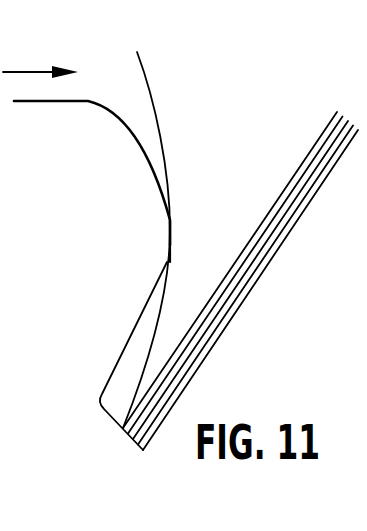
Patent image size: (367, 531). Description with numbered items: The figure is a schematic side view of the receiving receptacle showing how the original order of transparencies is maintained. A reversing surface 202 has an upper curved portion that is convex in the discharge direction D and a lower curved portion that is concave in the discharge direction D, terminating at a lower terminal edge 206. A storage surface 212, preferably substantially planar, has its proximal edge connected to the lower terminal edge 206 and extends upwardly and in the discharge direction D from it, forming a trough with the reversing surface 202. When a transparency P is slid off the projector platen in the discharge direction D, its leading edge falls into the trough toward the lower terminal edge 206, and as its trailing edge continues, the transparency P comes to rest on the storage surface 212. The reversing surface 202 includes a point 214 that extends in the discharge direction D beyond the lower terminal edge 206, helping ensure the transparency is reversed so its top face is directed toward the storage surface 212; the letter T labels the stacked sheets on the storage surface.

The reversing surface 202 is at (154, 170).
The lower terminal edge 206 is at (140, 452).
The storage surface 212 is at (228, 327).
The point 214 is at (170, 232).
The transparency P is at (143, 67).
The discharge direction D is at (53, 73).
The tape T is at (328, 122).